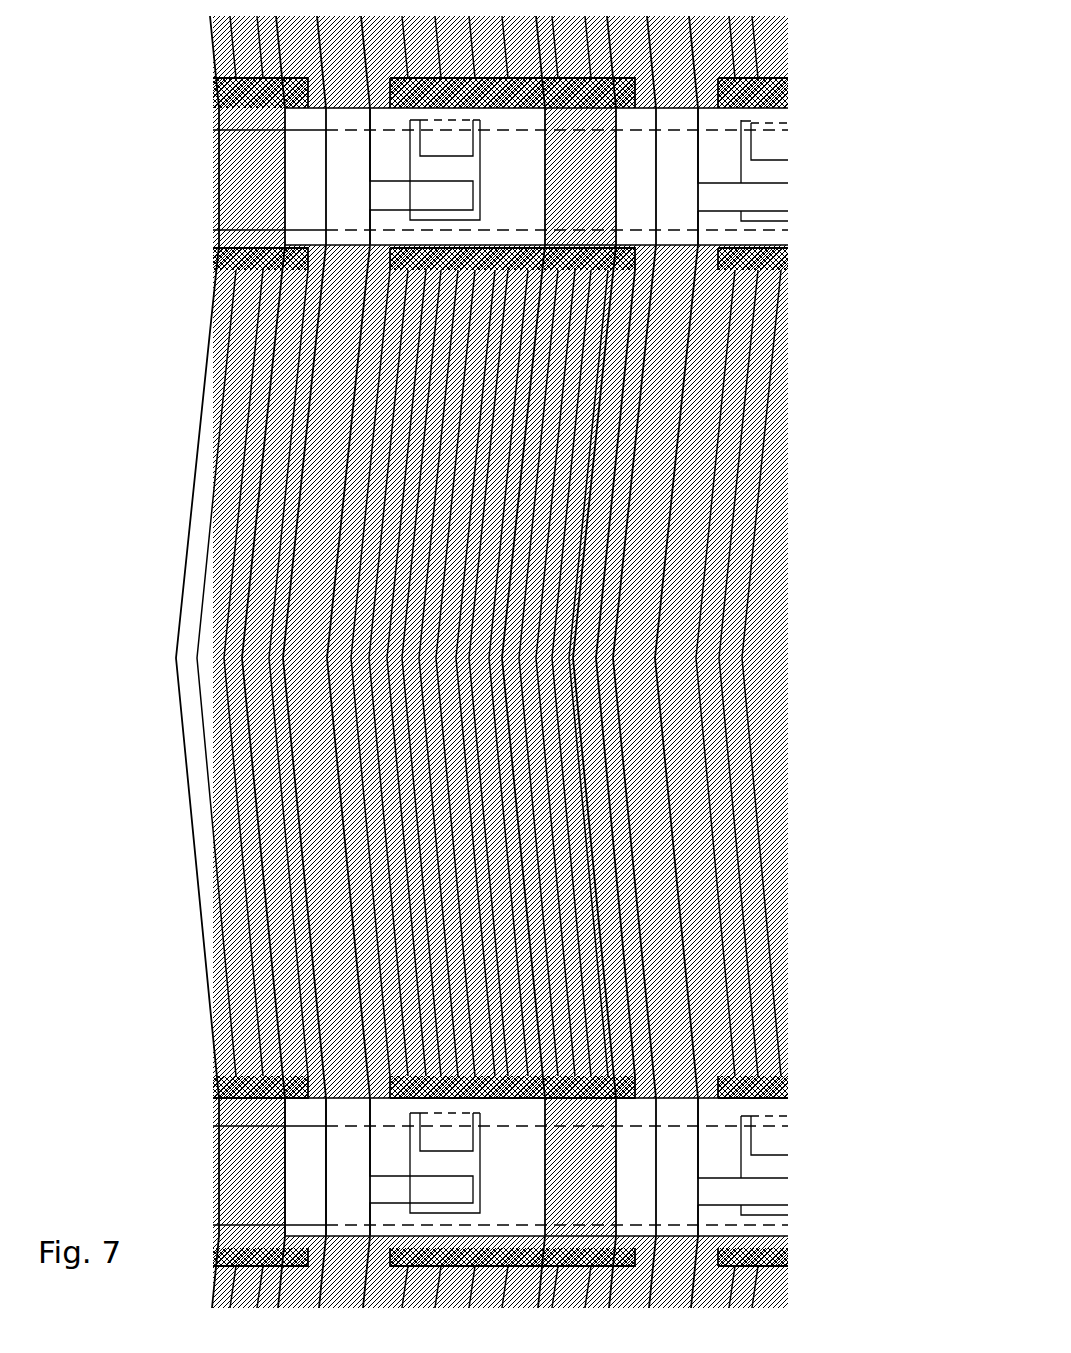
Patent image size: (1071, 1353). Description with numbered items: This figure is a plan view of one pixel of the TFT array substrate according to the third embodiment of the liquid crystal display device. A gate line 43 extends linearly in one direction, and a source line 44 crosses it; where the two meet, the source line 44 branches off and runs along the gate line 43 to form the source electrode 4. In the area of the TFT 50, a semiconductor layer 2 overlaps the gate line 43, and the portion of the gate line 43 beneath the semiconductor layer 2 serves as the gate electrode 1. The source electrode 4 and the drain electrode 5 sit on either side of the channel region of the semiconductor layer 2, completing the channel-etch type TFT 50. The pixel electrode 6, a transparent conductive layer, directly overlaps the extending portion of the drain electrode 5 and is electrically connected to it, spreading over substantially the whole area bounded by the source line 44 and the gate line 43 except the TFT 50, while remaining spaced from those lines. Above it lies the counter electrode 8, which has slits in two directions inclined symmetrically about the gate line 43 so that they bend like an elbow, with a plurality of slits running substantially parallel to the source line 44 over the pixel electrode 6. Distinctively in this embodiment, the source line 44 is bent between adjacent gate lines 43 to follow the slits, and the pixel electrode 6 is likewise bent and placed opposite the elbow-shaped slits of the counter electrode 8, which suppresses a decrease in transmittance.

The gate electrode 1 is at (408, 1212).
The semiconductor layer 2 is at (475, 1203).
The source electrode 4 is at (420, 1184).
The drain electrode 5 is at (475, 1128).
The TFT 50 is at (476, 1165).
The pixel electrode 6 is at (588, 990).
The counter electrode 8 is at (596, 917).
The gate line 43 is at (717, 1140).
The source line 44 is at (328, 1140).